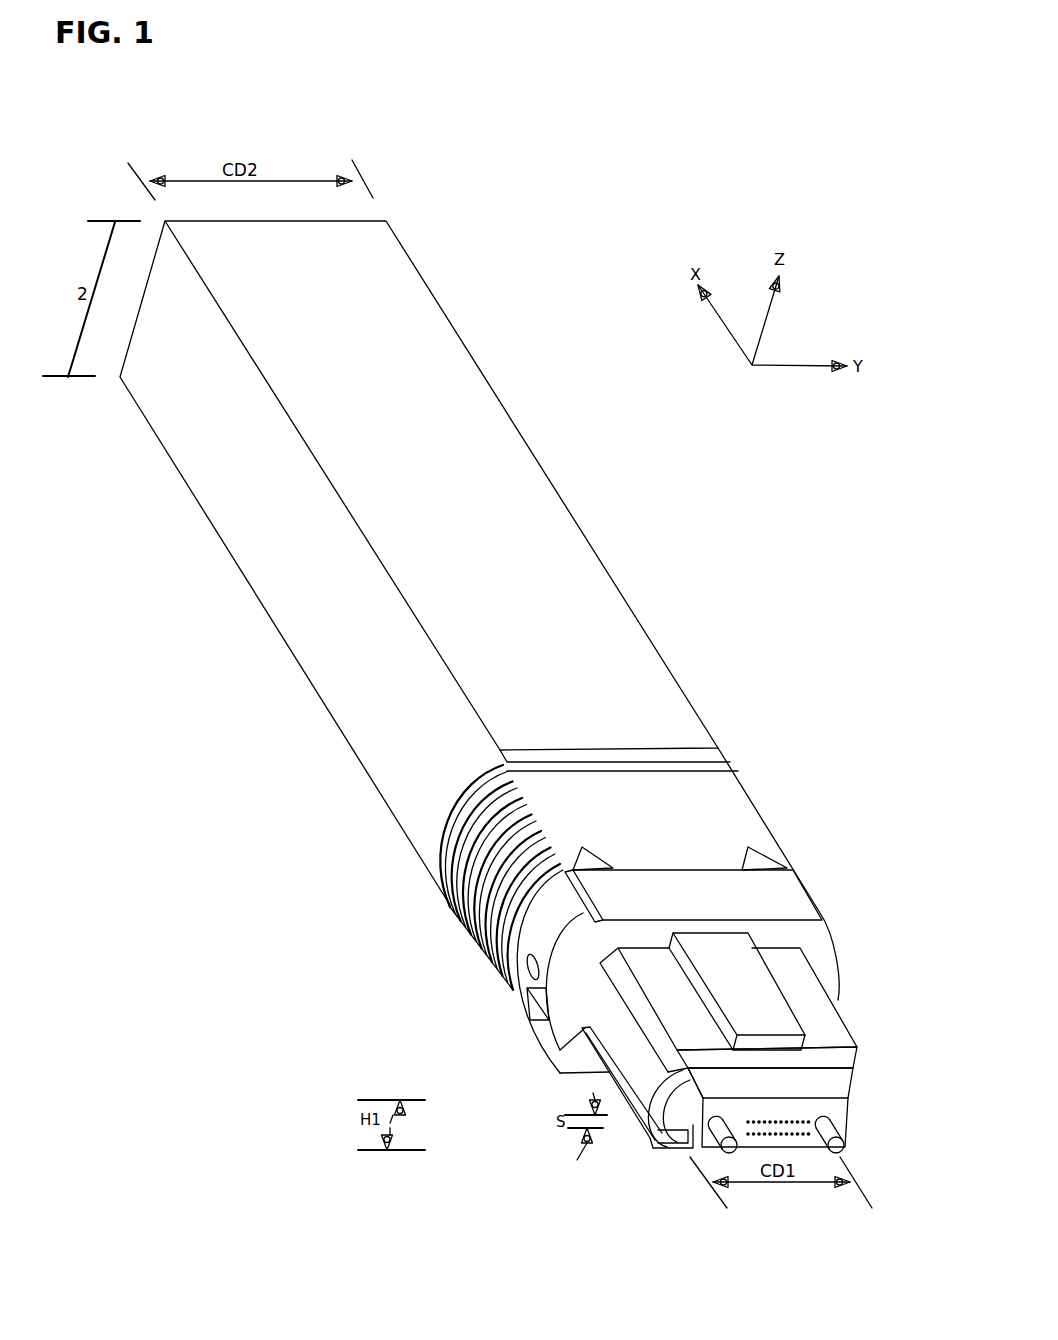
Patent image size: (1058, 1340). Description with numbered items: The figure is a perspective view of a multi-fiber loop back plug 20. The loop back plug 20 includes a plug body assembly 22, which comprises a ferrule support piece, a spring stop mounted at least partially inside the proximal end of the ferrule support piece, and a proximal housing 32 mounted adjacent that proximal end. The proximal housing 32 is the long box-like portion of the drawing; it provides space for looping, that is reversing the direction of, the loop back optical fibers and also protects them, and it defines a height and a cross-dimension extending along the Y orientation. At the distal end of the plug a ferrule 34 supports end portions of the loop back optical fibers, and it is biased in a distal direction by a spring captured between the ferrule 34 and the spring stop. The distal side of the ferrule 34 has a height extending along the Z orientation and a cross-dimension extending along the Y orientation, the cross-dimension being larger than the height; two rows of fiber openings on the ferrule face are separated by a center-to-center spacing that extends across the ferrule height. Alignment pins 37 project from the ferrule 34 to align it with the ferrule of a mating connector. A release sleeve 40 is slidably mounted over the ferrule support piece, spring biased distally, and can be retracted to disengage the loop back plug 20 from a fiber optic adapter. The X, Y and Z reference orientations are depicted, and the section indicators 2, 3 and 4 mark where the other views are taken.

The multi-fiber loop back plug 20 is at (623, 470).
The plug body assembly 22 is at (838, 997).
The proximal housing 32 is at (643, 627).
The ferrule 34 is at (832, 1090).
The alignment pins 37 is at (722, 1134).
The release sleeve 40 is at (760, 813).
The section line 2- 2 is at (198, 160).
The section line 3- 3 is at (543, 1118).
The section line 4- 4 is at (478, 250).